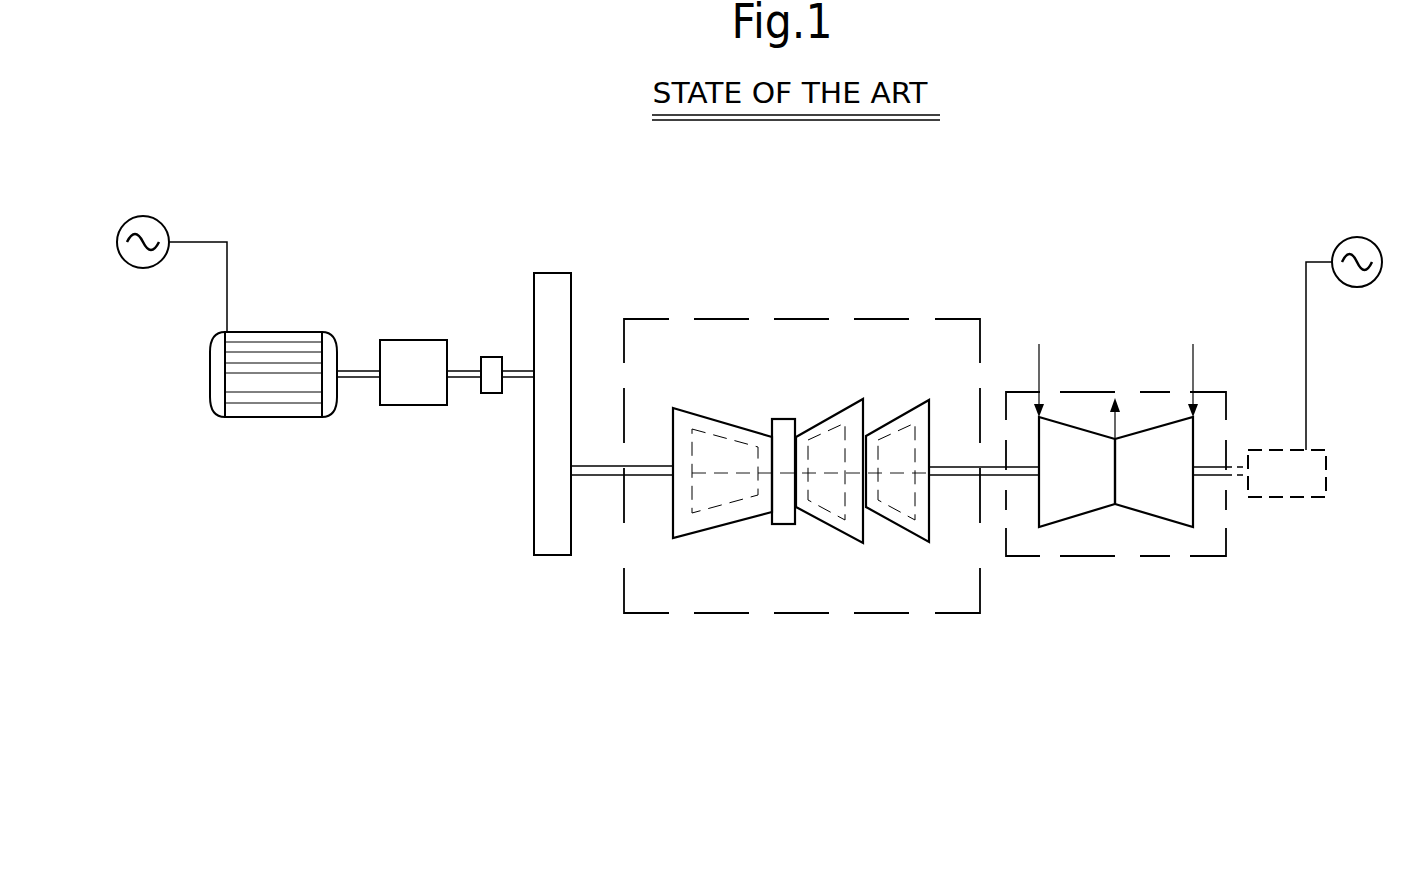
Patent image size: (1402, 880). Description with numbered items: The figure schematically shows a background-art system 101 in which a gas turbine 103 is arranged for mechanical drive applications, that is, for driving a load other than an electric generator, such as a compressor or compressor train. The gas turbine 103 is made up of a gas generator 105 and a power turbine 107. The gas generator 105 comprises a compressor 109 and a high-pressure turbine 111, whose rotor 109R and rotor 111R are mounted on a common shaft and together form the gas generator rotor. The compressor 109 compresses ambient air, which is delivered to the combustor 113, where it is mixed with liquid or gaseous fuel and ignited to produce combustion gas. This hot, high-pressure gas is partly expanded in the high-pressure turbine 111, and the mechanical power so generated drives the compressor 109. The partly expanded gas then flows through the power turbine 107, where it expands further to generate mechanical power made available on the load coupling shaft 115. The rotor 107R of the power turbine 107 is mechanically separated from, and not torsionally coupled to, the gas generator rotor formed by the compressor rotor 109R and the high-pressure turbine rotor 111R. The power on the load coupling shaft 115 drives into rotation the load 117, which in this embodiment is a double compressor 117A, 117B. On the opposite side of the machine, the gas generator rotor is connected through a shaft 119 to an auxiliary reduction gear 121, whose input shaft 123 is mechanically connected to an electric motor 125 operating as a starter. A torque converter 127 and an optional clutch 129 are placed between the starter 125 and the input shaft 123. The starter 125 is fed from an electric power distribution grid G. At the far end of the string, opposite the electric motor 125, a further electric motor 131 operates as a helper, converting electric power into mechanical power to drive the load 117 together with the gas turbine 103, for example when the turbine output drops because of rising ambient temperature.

The system 101 is at (293, 608).
The gas turbine 103 is at (780, 308).
The gas generator 105 is at (774, 548).
The power turbine 107 is at (941, 410).
The power turbine rotor 107R is at (915, 436).
The compressor 109 is at (720, 414).
The compressor rotor 109R is at (706, 502).
The high-pressure turbine 111 is at (820, 410).
The high-pressure turbine rotor 111R is at (832, 508).
The combustor 113 is at (782, 428).
The load coupling shaft 115 is at (971, 478).
The load 117 is at (1142, 456).
The first compressor of double compressor 117A is at (1077, 520).
The second compressor of double compressor 117B is at (1152, 520).
The shaft 119 is at (604, 478).
The auxiliary reduction gear 121 is at (554, 273).
The input shaft 123 is at (516, 370).
The electric motor 125 is at (278, 410).
The torque converter 127 is at (424, 404).
The clutch 129 is at (494, 396).
The electric motor (helper) 131 is at (1286, 498).
The electric power distribution grid G is at (158, 220).